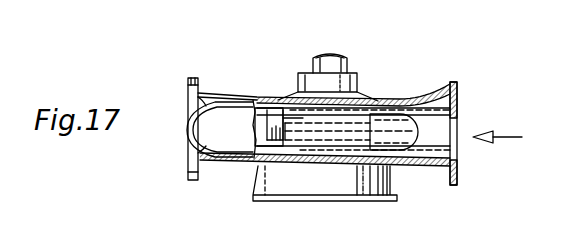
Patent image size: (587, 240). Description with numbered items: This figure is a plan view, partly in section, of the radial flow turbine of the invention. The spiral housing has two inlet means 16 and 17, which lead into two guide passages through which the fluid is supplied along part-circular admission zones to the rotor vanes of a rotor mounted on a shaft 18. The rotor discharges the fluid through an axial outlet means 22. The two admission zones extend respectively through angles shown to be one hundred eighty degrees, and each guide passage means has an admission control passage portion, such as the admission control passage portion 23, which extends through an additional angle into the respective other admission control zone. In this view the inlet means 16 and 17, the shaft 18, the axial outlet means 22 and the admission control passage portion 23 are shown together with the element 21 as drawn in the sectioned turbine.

The inlet means 16 is at (450, 115).
The inlet means 17 is at (189, 161).
The shaft 18 is at (342, 64).
The plug nose 21 is at (257, 132).
The axial outlet means 22 is at (390, 181).
The admission control passage portion 23 is at (292, 137).